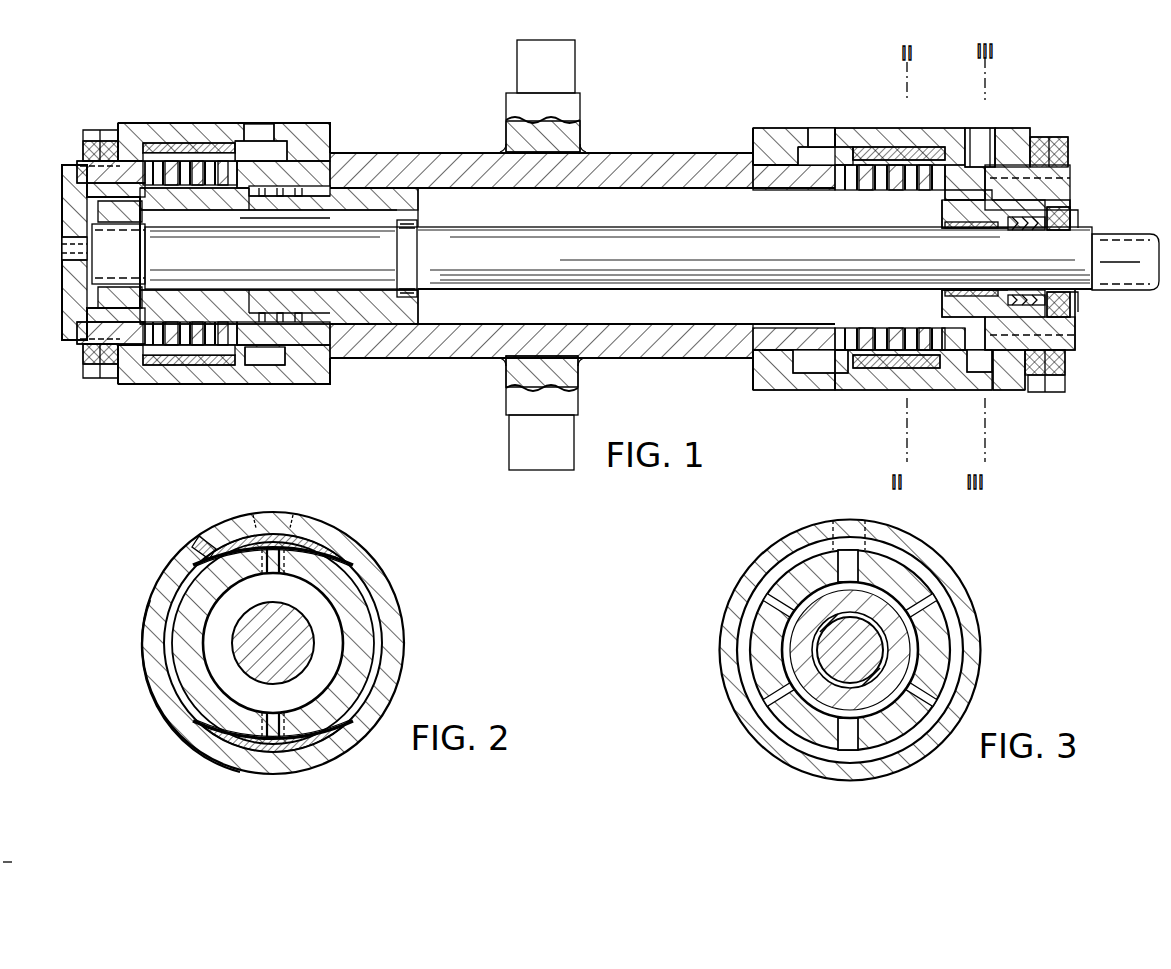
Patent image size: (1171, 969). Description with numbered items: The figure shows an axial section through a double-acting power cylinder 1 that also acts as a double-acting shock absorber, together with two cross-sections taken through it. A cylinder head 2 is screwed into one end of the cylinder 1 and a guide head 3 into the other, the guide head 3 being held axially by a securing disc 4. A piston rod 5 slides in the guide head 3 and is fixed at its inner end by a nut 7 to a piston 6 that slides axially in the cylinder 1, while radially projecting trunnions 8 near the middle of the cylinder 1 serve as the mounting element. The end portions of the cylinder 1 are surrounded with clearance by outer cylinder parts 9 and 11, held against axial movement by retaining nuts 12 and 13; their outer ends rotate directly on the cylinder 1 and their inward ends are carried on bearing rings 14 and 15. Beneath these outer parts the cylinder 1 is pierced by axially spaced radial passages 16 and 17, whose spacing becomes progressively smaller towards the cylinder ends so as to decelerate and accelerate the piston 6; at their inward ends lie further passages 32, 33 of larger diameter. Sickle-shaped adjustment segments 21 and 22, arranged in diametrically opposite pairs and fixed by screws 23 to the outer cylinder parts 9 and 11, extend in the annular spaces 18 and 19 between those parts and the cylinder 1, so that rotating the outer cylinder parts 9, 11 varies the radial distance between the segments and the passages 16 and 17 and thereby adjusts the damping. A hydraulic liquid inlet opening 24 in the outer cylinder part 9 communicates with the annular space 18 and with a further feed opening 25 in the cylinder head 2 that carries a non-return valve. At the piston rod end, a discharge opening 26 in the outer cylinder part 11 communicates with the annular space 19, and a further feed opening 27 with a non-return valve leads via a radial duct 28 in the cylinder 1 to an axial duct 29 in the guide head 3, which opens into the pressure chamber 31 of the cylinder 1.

In FIG. 1, the double-acting power cylinder 1 is at (442, 340).
In FIG. 2, the double-acting power cylinder 1 is at (182, 618).
In FIG. 3, the double-acting power cylinder 1 is at (940, 642).
In FIG. 1, the cylinder head 2 is at (70, 312).
In FIG. 1, the guide head 3 is at (986, 312).
In FIG. 3, the guide head 3 is at (822, 690).
In FIG. 1, the securing disc 4 is at (1068, 304).
In FIG. 1, the piston rod 5 is at (1128, 272).
In FIG. 2, the piston rod 5 is at (300, 640).
In FIG. 3, the piston rod 5 is at (822, 637).
In FIG. 1, the piston 6 is at (375, 312).
In FIG. 1, the nut 7 is at (78, 286).
In FIG. 1, the trunnions 8 is at (580, 378).
In FIG. 1, the outer cylinder part 9 is at (246, 338).
In FIG. 1, the outer cylinder part 11 is at (948, 355).
In FIG. 2, the outer cylinder part 11 is at (378, 575).
In FIG. 3, the outer cylinder part 11 is at (972, 682).
In FIG. 1, the retaining nut 12 is at (105, 380).
In FIG. 1, the retaining nut 13 is at (1048, 392).
In FIG. 1, the bearing ring 14 is at (328, 378).
In FIG. 1, the bearing ring 15 is at (750, 376).
In FIG. 1, the radial passages 16 is at (170, 352).
In FIG. 1, the radial passages 17 is at (872, 352).
In FIG. 2, the radial passages 17 is at (290, 562).
In FIG. 1, the annular space 18 is at (280, 362).
In FIG. 1, the annular space 19 is at (800, 372).
In FIG. 2, the annular space 19 is at (166, 655).
In FIG. 3, the annular space 19 is at (750, 606).
In FIG. 1, the adjustment segments 21 is at (212, 362).
In FIG. 1, the adjustment segments 22 is at (912, 345).
In FIG. 2, the adjustment segments 22 is at (300, 540).
In FIG. 2, the screws 23 is at (208, 536).
In FIG. 1, the hydraulic liquid inlet opening 24 is at (262, 133).
In FIG. 1, the feed opening 25 is at (72, 250).
In FIG. 1, the discharge opening 26 is at (816, 133).
In FIG. 2, the discharge opening 26 is at (270, 513).
In FIG. 1, the hydraulic liquid feed opening 27 is at (968, 140).
In FIG. 3, the hydraulic liquid feed opening 27 is at (848, 538).
In FIG. 1, the radial duct 28 is at (1022, 168).
In FIG. 3, the radial duct 28 is at (932, 606).
In FIG. 1, the axial duct 29 is at (938, 190).
In FIG. 3, the axial duct 29 is at (888, 600).
In FIG. 1, the pressure chamber 31 is at (662, 320).
In FIG. 2, the pressure chamber 31 is at (340, 630).
In FIG. 1, the further passages 32 is at (262, 340).
In FIG. 1, the further passages 33 is at (838, 340).